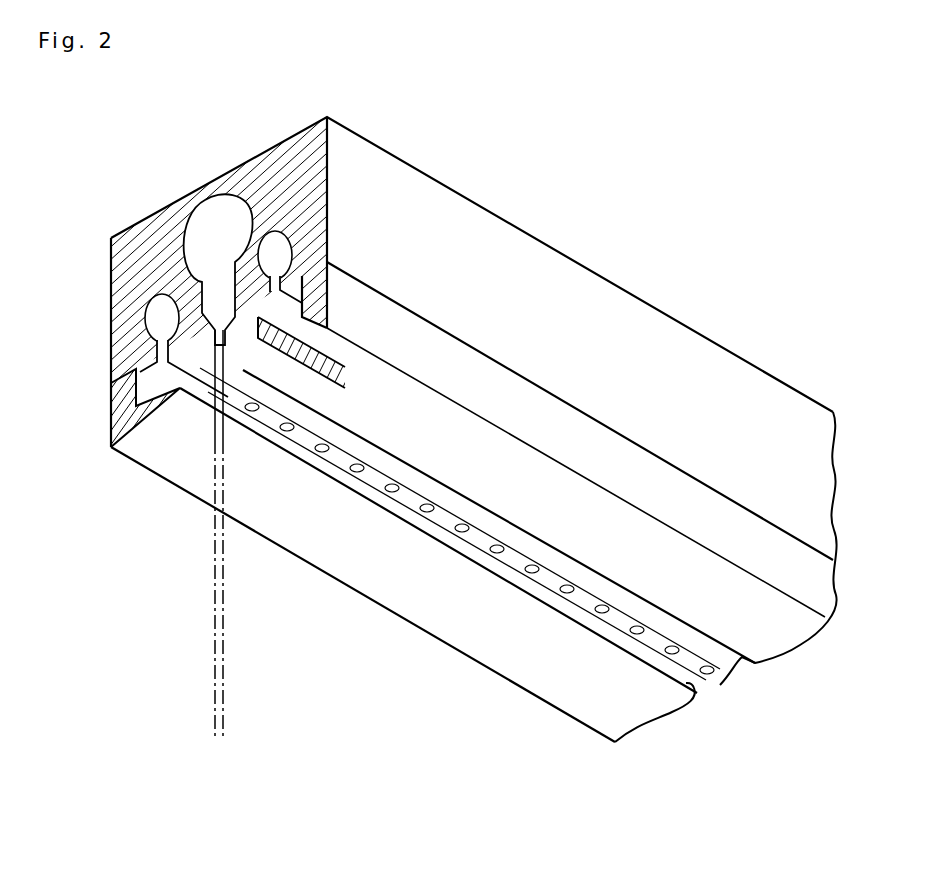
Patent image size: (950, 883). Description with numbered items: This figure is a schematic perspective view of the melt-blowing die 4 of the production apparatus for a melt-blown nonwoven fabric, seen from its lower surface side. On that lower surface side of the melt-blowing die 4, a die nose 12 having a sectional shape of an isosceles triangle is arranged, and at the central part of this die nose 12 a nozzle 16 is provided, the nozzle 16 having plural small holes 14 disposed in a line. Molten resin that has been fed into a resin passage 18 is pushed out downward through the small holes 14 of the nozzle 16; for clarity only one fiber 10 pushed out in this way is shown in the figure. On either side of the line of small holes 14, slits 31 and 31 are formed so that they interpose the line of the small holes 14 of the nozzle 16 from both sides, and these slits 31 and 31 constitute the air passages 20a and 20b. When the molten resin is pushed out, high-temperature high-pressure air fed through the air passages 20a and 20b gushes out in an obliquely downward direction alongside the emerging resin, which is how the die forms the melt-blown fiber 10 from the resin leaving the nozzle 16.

The melt-blowing die 4 is at (292, 165).
The fiber 10 is at (214, 624).
The die nose 12 is at (135, 411).
The small holes 14 is at (460, 524).
The nozzle 16 is at (440, 530).
The resin passage 18 is at (213, 238).
The air passage 20a is at (155, 318).
The air passage 20b is at (283, 245).
The slits 31 is at (248, 372).